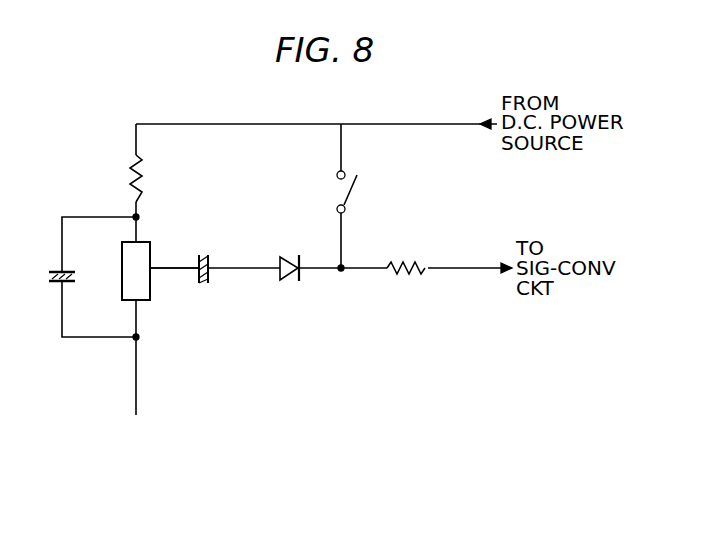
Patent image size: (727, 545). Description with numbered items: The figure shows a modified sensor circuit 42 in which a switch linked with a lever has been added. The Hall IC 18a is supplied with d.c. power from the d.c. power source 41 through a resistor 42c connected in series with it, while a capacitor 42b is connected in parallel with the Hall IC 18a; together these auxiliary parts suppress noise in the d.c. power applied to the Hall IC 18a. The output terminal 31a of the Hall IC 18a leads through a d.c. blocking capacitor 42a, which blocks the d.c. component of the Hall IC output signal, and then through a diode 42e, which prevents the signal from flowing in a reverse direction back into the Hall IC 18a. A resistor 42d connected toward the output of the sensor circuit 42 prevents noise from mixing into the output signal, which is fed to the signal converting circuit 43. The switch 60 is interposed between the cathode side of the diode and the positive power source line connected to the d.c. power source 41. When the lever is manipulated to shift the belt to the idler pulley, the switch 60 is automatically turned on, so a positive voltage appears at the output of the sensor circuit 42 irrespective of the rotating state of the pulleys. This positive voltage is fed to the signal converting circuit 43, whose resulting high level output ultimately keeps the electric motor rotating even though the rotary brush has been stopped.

The sensor circuit 42 is at (251, 362).
The d.c. blocking capacitor 42a is at (210, 283).
The capacitor 42b is at (61, 285).
The resistor 42c is at (142, 175).
The resistor 42d is at (419, 279).
The diode 42e is at (287, 282).
The Hall IC 18a is at (152, 251).
The output terminal 31a is at (158, 272).
The switch 60 is at (352, 192).
The d.c. power source 41 is at (602, 143).
The signal converting circuit 43 is at (584, 288).